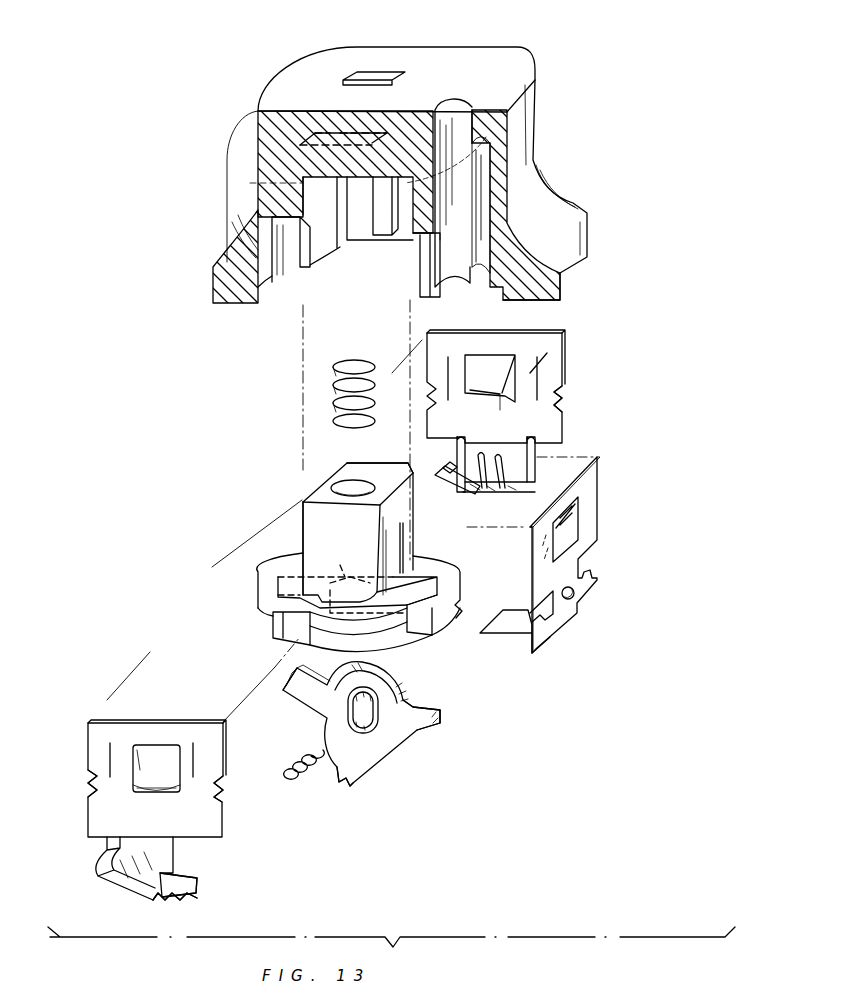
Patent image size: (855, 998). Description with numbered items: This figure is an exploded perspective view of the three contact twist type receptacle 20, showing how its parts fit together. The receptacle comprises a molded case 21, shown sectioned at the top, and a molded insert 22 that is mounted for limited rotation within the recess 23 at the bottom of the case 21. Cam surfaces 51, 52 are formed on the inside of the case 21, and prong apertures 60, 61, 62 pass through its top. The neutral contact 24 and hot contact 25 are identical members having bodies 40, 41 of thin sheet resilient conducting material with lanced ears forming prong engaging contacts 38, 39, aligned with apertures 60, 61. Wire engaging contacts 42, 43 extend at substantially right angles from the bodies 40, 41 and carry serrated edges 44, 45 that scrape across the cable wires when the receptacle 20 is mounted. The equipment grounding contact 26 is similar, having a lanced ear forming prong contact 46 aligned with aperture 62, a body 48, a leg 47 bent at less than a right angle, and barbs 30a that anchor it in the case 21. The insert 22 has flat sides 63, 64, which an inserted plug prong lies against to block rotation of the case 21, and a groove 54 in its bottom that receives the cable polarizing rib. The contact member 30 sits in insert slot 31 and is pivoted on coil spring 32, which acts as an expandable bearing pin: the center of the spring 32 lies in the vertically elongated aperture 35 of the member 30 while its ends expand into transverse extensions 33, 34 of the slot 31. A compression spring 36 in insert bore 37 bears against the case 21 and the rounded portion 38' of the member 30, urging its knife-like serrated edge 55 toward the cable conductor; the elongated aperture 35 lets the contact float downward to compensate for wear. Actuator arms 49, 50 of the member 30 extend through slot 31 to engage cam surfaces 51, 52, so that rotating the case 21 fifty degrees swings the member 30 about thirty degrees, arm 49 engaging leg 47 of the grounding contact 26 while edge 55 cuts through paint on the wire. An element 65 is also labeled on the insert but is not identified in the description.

The three contact twist type receptacle 20 is at (621, 432).
The molded case 21 is at (273, 80).
The molded insert 22 is at (290, 530).
The recess 23 is at (362, 247).
The neutral contact 24 is at (580, 357).
The hot contact 25 is at (235, 827).
The equipment grounding contact 26 is at (614, 513).
The contact member 30 is at (361, 733).
The barbs 30a is at (528, 613).
The insert slot 31 is at (405, 549).
The coil spring 32 is at (300, 775).
The transverse extension 33 is at (373, 566).
The transverse extension 34 is at (349, 573).
The vertically elongated aperture 35 is at (377, 700).
The compression spring 36 is at (345, 370).
The insert bore 37 is at (346, 486).
The prong engaging contact 38 is at (503, 416).
The rounded portion 38' is at (380, 675).
The prong engaging contact 39 is at (160, 786).
The body 40 is at (503, 359).
The body 41 is at (162, 751).
The wire engaging contact 42 is at (453, 496).
The wire engaging contact 43 is at (188, 881).
The serrated edge 44 is at (451, 470).
The serrated edge 45 is at (183, 898).
The prong contact 46 is at (566, 528).
The leg 47 is at (497, 641).
The body 48 is at (566, 585).
The actuator arm 49 is at (425, 736).
The actuator arm 50 is at (300, 702).
The cam surface 51 is at (414, 236).
The cam surface 52 is at (306, 225).
The groove 54 is at (447, 616).
The serrated edge 55 is at (347, 782).
The case aperture 60 is at (380, 72).
The case aperture 61 is at (337, 133).
The case aperture 62 is at (457, 103).
The flat side 63 is at (411, 466).
The flat side 64 is at (318, 541).
The top face 65 is at (318, 490).